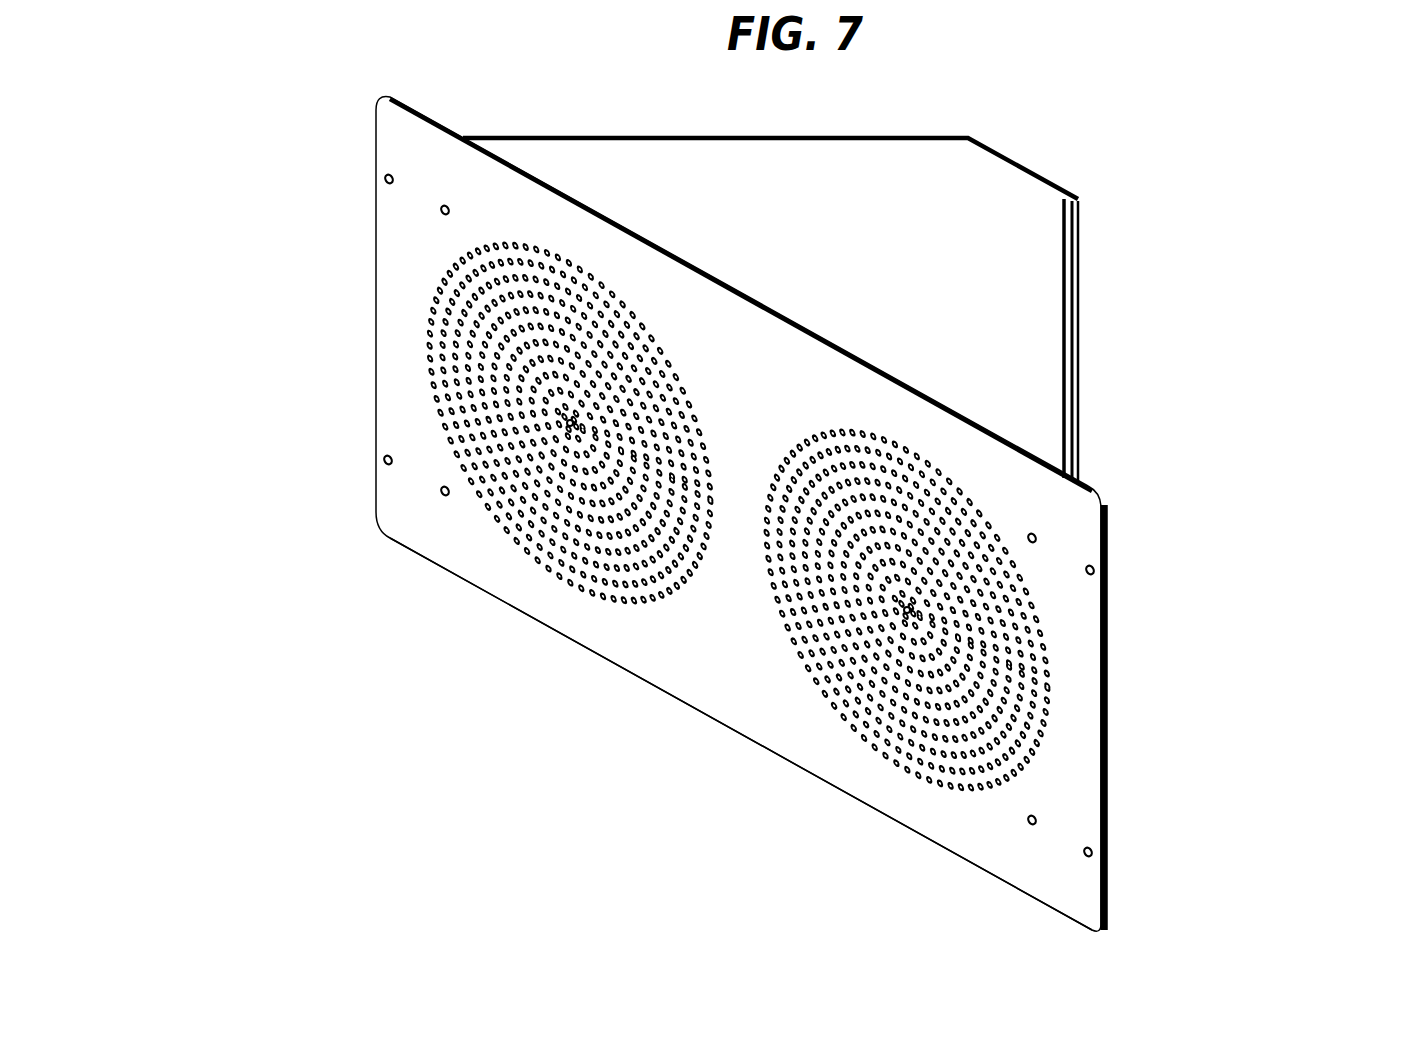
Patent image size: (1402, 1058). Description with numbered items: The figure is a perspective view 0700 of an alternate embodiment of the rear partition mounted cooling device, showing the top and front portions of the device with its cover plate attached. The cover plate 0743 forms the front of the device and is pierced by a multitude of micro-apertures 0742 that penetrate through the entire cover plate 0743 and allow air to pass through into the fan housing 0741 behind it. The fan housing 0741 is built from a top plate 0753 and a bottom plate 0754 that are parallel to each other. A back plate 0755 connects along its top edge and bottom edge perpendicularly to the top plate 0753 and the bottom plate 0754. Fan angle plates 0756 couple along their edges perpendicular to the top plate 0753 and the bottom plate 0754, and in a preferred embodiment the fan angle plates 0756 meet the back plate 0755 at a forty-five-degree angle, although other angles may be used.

The perspective view 0700 is at (284, 151).
The fan housing 0741 is at (992, 320).
The micro-apertures 0742 is at (956, 633).
The cover plate 0743 is at (662, 644).
The top plate 0753 is at (922, 177).
The bottom plate 0754 is at (748, 760).
The back plate 0755 is at (1104, 233).
The fan angle plates 0756 is at (1120, 445).